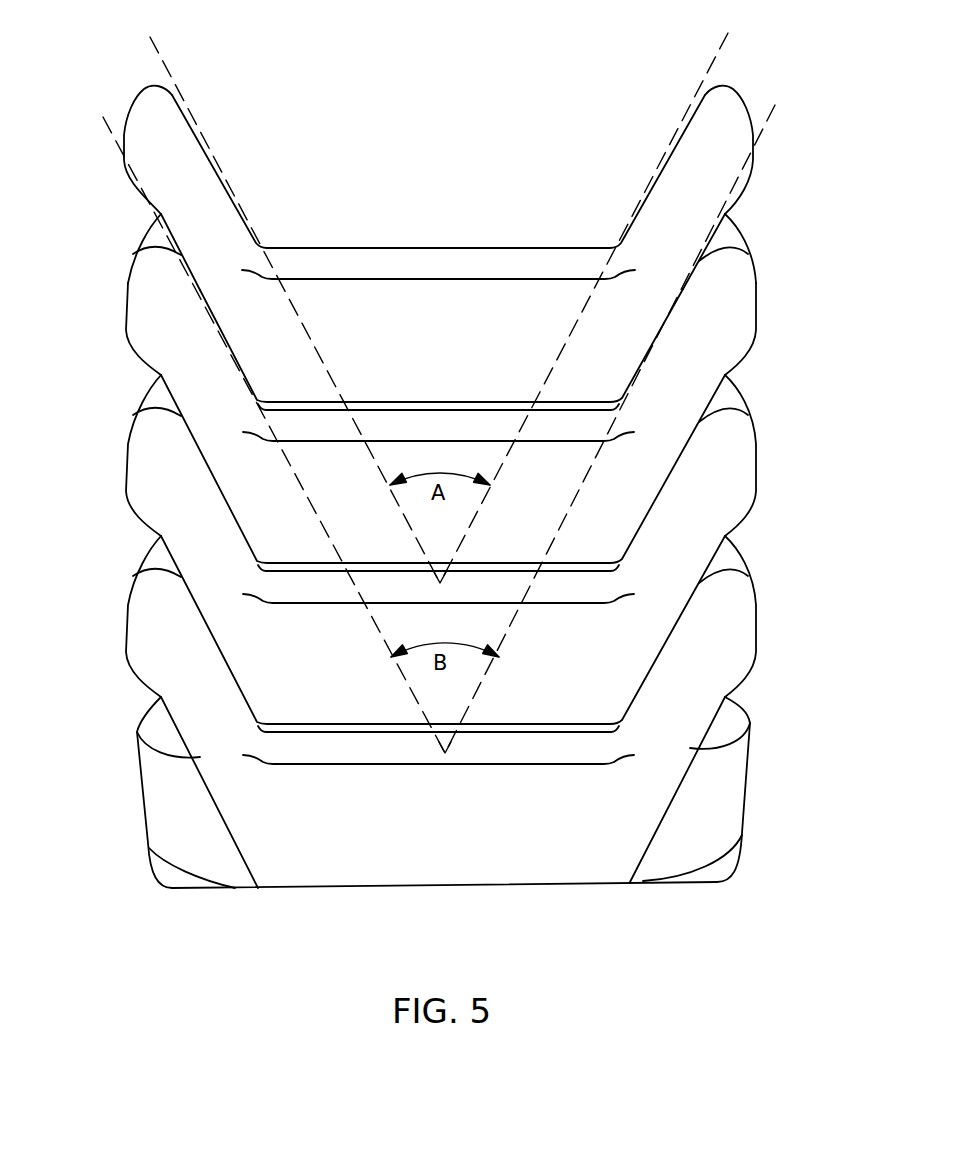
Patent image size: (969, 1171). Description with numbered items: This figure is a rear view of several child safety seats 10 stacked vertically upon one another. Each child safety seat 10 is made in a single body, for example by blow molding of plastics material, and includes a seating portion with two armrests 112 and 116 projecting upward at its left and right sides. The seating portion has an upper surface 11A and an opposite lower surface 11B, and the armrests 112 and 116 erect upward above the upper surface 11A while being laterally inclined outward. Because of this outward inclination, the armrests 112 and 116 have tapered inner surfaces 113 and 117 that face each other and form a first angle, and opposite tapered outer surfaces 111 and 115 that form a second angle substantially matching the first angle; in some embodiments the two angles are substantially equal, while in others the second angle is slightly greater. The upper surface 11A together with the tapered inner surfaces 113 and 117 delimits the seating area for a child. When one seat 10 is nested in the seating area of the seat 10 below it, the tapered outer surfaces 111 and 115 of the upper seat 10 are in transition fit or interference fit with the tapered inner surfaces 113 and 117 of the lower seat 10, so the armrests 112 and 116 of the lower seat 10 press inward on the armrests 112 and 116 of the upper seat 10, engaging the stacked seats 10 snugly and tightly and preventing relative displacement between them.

The child safety seat 10 is at (442, 452).
The upper surface 11A is at (437, 248).
The lower surface 11B is at (449, 410).
The tapered outer surface 111 is at (188, 256).
The armrest 112 is at (147, 452).
The tapered inner surface 113 is at (226, 178).
The tapered outer surface 115 is at (690, 249).
The armrest 116 is at (733, 449).
The tapered inner surface 117 is at (652, 178).